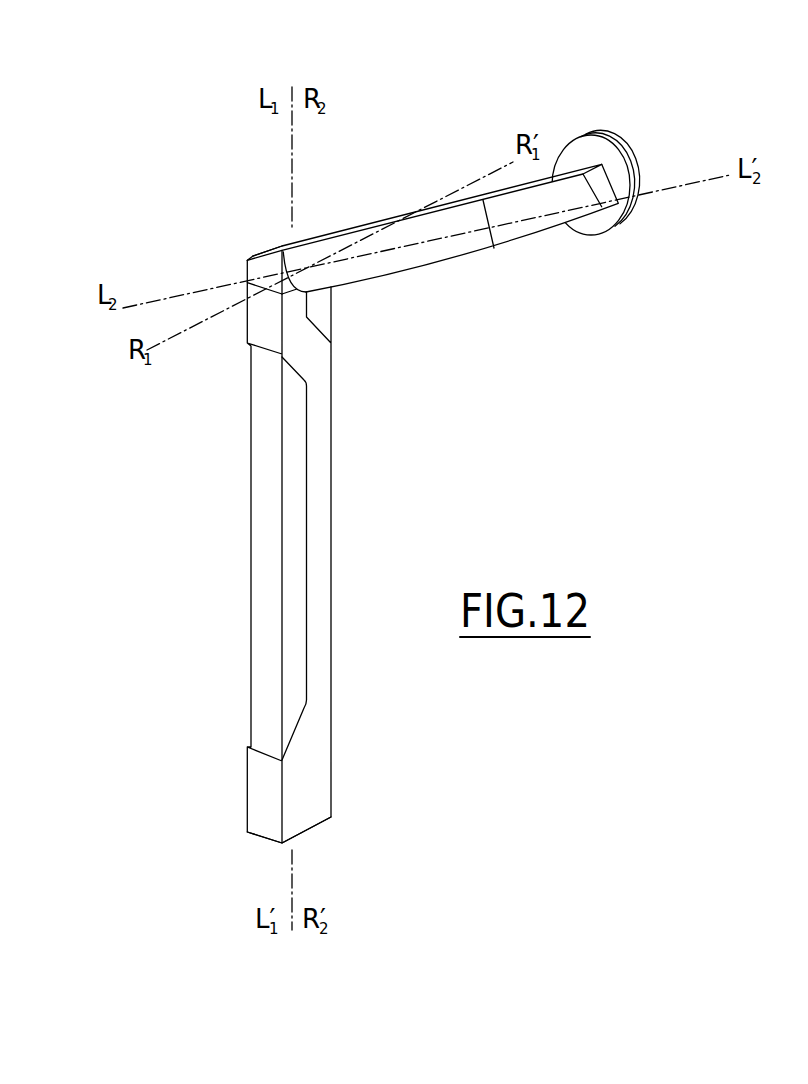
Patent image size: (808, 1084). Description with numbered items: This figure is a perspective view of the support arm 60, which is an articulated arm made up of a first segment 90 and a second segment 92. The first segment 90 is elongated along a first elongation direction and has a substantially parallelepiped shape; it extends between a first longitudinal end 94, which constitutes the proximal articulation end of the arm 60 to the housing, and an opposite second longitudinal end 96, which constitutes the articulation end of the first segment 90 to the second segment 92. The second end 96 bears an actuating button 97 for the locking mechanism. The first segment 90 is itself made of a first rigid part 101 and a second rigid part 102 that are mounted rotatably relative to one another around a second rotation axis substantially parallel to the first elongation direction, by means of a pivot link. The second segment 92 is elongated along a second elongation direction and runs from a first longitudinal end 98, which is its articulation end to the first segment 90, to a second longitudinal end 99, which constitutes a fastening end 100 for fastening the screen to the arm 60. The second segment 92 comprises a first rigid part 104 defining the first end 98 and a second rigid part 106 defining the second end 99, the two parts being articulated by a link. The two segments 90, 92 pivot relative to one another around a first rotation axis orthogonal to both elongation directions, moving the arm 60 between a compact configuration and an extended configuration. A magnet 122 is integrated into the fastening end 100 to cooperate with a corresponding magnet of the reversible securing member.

The arm 60 is at (403, 470).
The first segment 90 is at (263, 519).
The second segment 92 is at (432, 243).
The first longitudinal end 94 is at (308, 832).
The second longitudinal end 96 is at (257, 263).
The actuating button 97 is at (275, 246).
The first longitudinal end 98 is at (317, 277).
The second longitudinal end 99 is at (630, 180).
The fastening end 100 is at (593, 153).
The first rigid part 101 is at (263, 518).
The second rigid part 102 is at (253, 277).
The first rigid part 104 is at (393, 217).
The second rigid part 106 is at (588, 134).
The magnet 122 is at (633, 163).